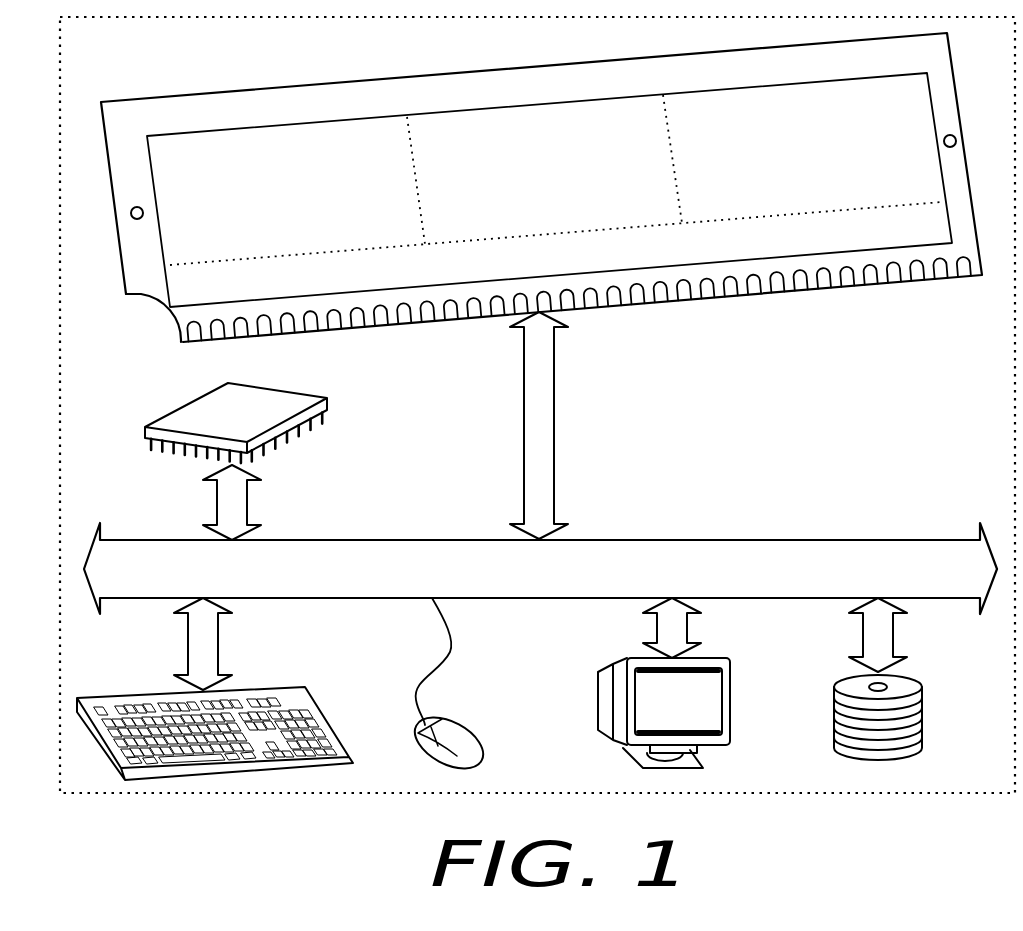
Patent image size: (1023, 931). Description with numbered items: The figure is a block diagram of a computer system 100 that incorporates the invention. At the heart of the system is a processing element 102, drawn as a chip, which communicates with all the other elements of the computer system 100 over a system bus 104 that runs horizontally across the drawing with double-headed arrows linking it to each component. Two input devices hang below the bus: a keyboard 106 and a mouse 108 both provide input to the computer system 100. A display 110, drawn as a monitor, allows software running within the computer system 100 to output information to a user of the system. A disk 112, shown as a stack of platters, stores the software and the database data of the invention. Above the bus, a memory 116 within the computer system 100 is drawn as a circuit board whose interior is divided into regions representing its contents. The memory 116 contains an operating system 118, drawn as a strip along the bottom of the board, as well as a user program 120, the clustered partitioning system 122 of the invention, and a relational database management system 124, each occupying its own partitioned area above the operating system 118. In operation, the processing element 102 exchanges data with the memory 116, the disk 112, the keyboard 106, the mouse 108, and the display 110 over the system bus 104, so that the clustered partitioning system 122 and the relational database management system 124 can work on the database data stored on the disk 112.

The computer system 100 is at (183, 795).
The processing element 102 is at (280, 391).
The system bus 104 is at (374, 540).
The keyboard 106 is at (279, 688).
The mouse 108 is at (468, 724).
The display 110 is at (731, 695).
The disk 112 is at (918, 682).
The memory 116 is at (386, 76).
The operating system 118 is at (171, 307).
The user program 120 is at (856, 86).
The clustered partitioning system 122 is at (594, 110).
The relational database management system 124 is at (210, 142).